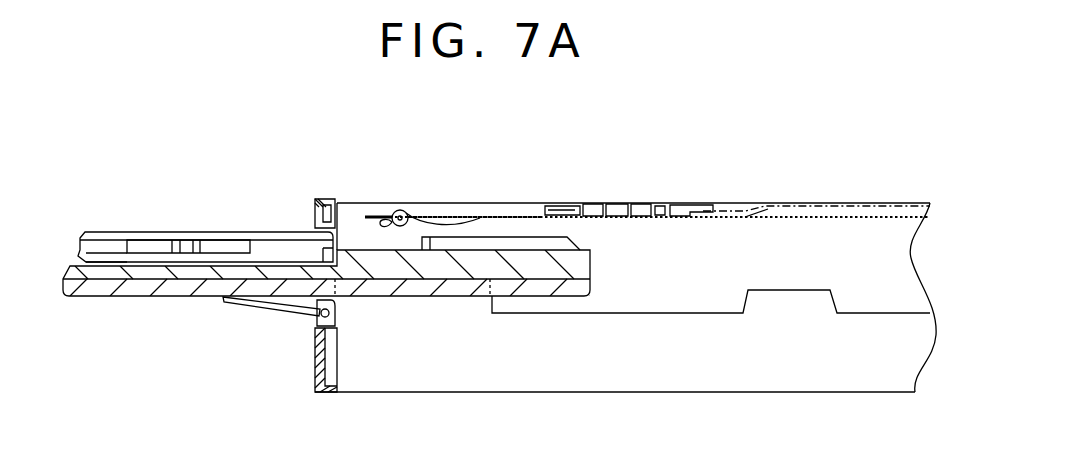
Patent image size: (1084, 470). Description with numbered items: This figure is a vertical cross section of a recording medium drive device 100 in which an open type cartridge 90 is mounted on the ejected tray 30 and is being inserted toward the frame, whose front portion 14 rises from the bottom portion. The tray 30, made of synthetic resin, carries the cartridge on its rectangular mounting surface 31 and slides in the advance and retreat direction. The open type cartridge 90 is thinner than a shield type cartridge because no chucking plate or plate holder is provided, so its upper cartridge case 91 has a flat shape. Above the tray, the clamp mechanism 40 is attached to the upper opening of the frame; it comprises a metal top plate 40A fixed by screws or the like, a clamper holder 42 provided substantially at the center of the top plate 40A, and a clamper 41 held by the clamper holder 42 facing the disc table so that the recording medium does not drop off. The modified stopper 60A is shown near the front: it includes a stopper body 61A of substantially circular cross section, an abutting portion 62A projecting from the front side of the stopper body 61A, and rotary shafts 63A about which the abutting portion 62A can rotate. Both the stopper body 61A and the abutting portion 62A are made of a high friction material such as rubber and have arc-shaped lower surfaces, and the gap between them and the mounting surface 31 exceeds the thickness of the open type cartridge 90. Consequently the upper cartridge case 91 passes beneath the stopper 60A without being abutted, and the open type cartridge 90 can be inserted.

The recording medium drive device 100 is at (820, 398).
The front portion 14 is at (318, 357).
The tray 30 is at (75, 305).
The mounting surface 31 is at (108, 262).
The open type cartridge 90 is at (222, 220).
The upper cartridge case 91 is at (256, 230).
The clamp mechanism 40 is at (690, 183).
The top plate 40A is at (545, 206).
The clamper 41 is at (637, 204).
The clamper holder 42 is at (745, 210).
The stopper 60A is at (400, 210).
The stopper body 61A is at (410, 216).
The abutting portion 62A is at (383, 220).
The rotary shafts 63A is at (478, 217).